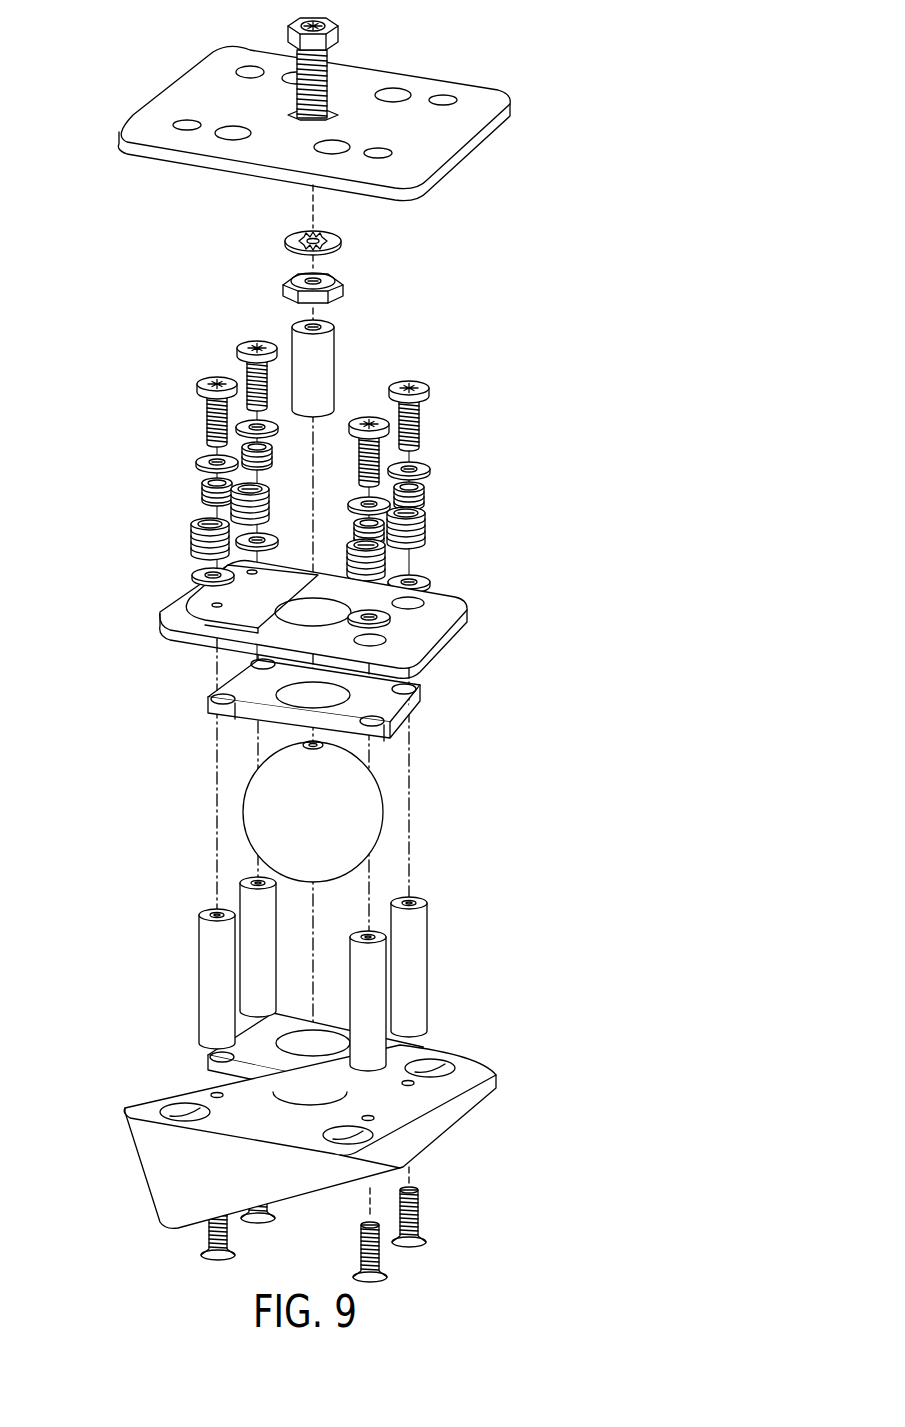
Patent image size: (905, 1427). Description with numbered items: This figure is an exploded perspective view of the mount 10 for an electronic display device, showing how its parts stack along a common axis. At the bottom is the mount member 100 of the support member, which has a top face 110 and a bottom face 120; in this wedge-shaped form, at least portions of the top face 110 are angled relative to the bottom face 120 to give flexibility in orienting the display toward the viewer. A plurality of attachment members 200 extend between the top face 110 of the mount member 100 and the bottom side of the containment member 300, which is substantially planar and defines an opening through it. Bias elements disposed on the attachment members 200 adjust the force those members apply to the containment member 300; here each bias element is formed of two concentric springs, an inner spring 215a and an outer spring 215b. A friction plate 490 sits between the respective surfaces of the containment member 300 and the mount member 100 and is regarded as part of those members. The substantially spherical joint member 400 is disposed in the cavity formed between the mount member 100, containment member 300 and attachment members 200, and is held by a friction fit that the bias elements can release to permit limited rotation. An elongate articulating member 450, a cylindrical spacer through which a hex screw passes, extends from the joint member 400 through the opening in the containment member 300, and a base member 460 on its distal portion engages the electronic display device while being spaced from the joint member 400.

The mount 10 is at (108, 352).
The mount member 100 is at (351, 1143).
The top face 110 is at (457, 1062).
The bottom face 120 is at (297, 1200).
The attachment members 200 is at (306, 461).
The inner spring 215a is at (200, 490).
The outer spring 215b is at (193, 531).
The containment member 300 is at (468, 611).
The joint member 400 is at (383, 800).
The elongate articulating member 450 is at (337, 347).
The base member 460 is at (490, 88).
The friction plate 490 is at (418, 692).